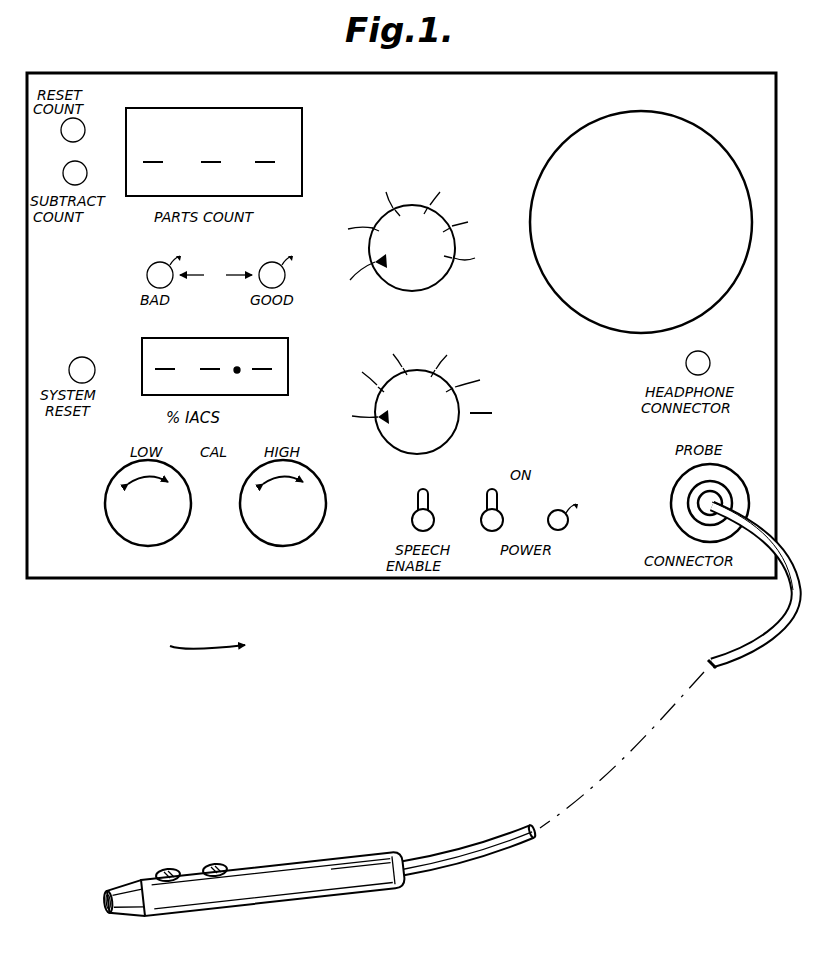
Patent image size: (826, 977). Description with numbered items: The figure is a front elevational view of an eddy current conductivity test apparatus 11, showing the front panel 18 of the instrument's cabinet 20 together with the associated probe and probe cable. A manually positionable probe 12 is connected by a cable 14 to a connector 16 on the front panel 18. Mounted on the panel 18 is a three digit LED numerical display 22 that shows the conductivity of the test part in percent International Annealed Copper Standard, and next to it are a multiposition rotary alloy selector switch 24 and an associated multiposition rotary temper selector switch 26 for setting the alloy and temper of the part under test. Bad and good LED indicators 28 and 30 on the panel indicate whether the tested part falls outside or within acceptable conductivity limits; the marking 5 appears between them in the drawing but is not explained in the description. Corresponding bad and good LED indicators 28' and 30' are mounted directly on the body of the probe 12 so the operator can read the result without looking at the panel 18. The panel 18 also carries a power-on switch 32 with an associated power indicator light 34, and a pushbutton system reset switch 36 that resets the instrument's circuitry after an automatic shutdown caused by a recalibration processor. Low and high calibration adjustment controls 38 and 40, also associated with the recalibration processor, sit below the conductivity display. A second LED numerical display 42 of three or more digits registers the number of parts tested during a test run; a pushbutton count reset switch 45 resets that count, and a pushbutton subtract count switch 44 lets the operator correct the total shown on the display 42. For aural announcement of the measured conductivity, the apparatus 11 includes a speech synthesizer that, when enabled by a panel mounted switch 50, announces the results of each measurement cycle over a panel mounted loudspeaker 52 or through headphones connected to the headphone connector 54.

The eddy current conductivity test apparatus 11 is at (191, 652).
The manually positionable probe 12 is at (262, 905).
The cable 14 is at (512, 845).
The connector 16 is at (740, 478).
The front panel 18 is at (460, 122).
The cabinet 20 is at (644, 72).
The three digit LED numerical display 22 is at (210, 337).
The multiposition rotary alloy selector switch 24 is at (447, 278).
The multiposition rotary temper selector switch 26 is at (452, 435).
The bad LED indicator 28 is at (142, 262).
The good LED indicator 30 is at (266, 258).
The indicator 5 is at (216, 275).
The power-on switch 32 is at (481, 515).
The power indicator light 34 is at (560, 509).
The pushbutton system reset switch 36 is at (82, 357).
The low calibration adjustment control 38 is at (115, 535).
The high calibration adjustment control 40 is at (250, 535).
The LED numerical display 42 is at (302, 128).
The pushbutton subtract count switch 44 is at (84, 164).
The pushbutton count reset switch 45 is at (62, 135).
The panel mounted switch 50 is at (412, 515).
The panel mounted loudspeaker 52 is at (665, 257).
The headphone connector 54 is at (706, 352).
The bad LED indicator 28' is at (167, 846).
The good LED indicator 30' is at (240, 843).